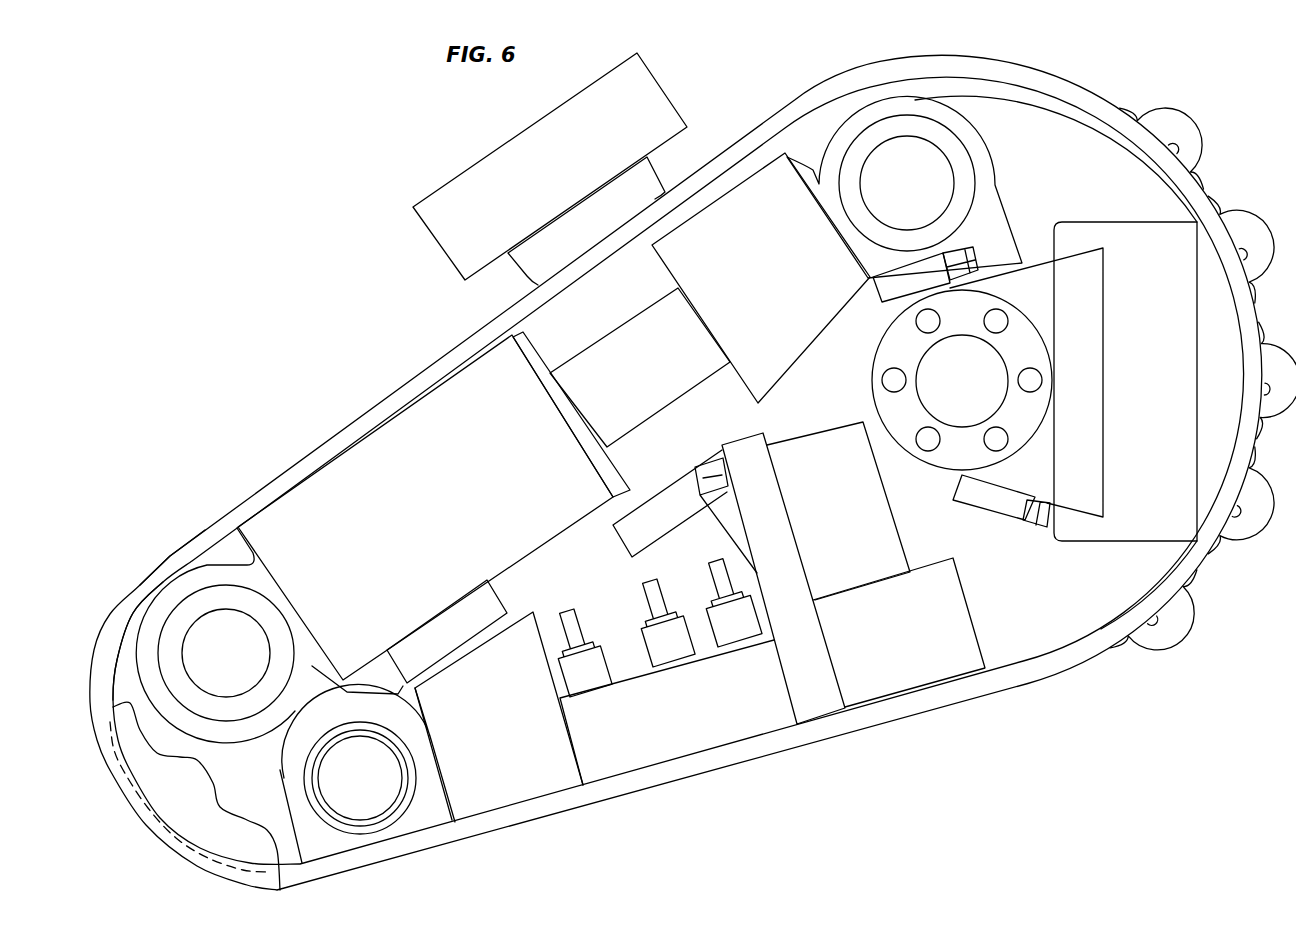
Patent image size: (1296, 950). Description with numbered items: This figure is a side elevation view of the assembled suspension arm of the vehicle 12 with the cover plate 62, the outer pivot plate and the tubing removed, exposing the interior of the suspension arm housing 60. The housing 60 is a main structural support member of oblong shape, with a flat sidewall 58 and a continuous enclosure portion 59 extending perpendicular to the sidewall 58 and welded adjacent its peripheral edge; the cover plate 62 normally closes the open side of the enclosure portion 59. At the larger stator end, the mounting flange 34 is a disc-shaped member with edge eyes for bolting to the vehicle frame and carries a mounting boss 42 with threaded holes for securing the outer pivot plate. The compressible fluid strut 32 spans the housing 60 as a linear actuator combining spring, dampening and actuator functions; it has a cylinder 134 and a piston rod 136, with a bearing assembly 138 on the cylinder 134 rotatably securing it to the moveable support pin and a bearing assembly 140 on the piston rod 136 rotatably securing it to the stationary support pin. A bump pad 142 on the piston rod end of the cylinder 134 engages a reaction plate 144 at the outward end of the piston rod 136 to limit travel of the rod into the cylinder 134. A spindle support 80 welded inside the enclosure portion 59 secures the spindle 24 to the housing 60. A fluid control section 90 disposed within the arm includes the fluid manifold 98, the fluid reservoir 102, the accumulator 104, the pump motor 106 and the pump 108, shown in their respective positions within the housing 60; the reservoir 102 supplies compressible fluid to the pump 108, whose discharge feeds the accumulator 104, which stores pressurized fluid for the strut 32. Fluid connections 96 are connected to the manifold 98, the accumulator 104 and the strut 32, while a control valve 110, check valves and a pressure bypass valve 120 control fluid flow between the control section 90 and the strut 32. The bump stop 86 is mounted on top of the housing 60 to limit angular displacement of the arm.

The drive assembly 12 is at (436, 112).
The spindle 24 is at (377, 803).
The compressible fluid strut 32 is at (388, 414).
The mounting flange 34 is at (1145, 210).
The mounting boss 42 is at (985, 365).
The sidewall 58 is at (135, 665).
The enclosure portion 59 is at (173, 542).
The suspension arm housing 60 is at (267, 473).
The cover plate 62 is at (157, 793).
The spindle support 80 is at (293, 765).
The bump stop 86 is at (460, 188).
The fluid control section 90 is at (392, 352).
The fluid connections 96 is at (875, 293).
The fluid manifold 98 is at (698, 738).
The fluid reservoir 102 is at (543, 782).
The accumulator 104 is at (1120, 224).
The pump motor 106 is at (880, 510).
The pump 108 is at (950, 612).
The control valve 110 is at (740, 630).
The pressure bypass valve 120 is at (588, 678).
The cylinder 134 is at (338, 475).
The piston rod 136 is at (630, 348).
The bearing assembly 138 is at (213, 617).
The bearing assembly 140 is at (923, 172).
The bump pad 142 is at (513, 335).
The reaction plate 144 is at (682, 255).